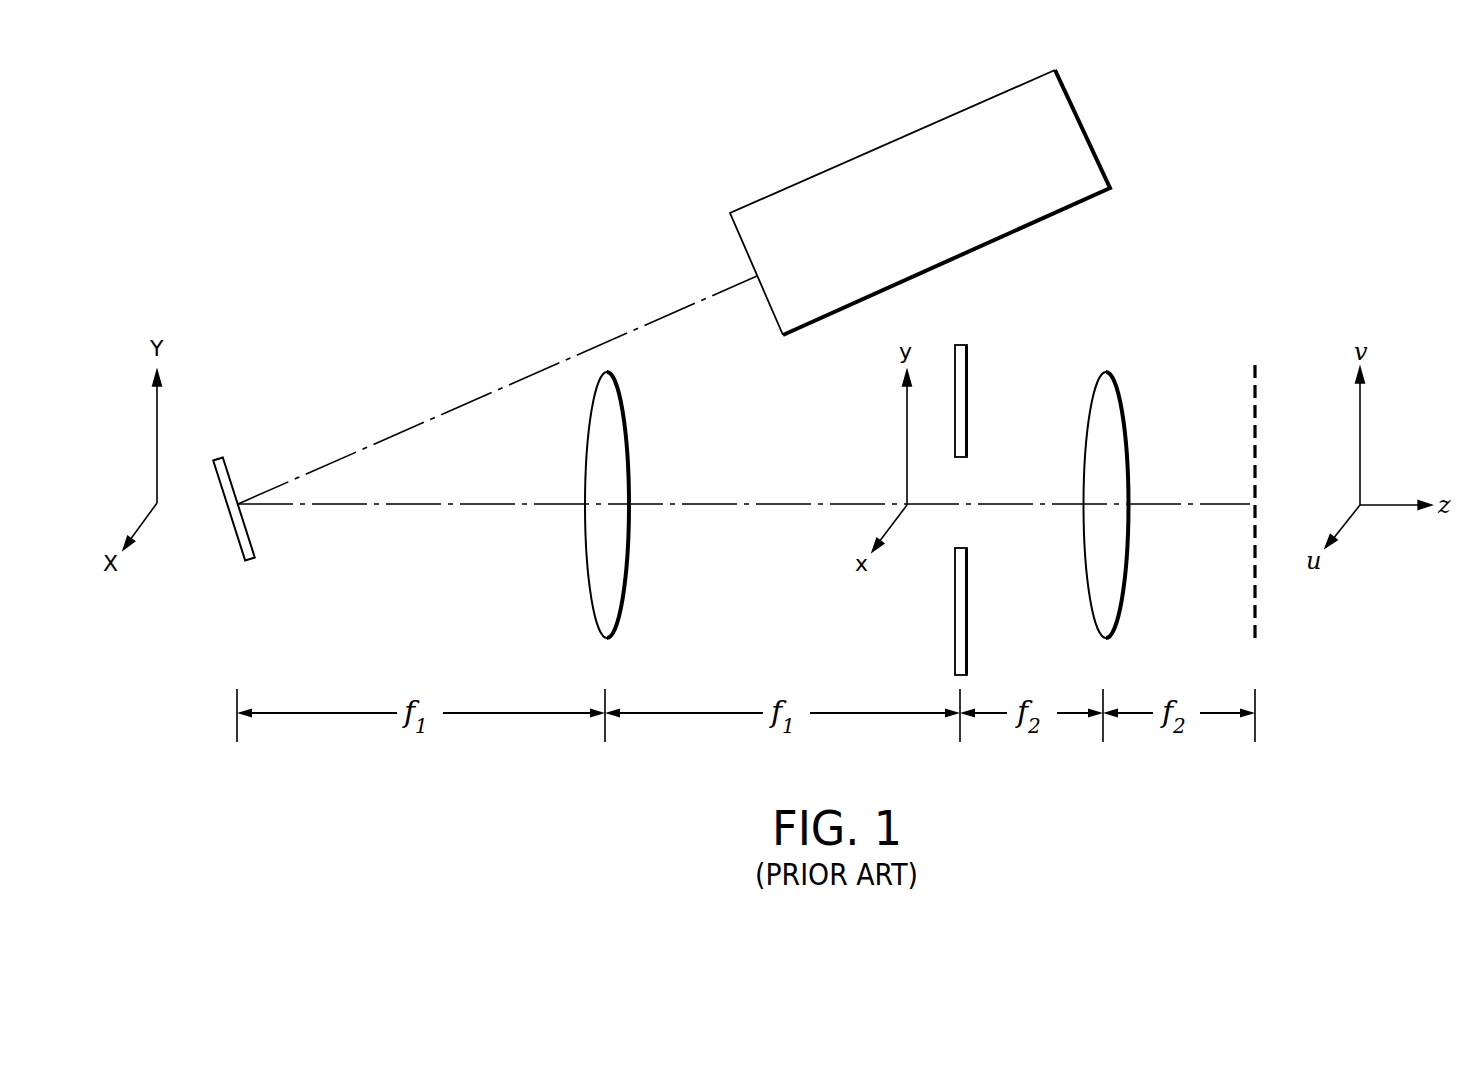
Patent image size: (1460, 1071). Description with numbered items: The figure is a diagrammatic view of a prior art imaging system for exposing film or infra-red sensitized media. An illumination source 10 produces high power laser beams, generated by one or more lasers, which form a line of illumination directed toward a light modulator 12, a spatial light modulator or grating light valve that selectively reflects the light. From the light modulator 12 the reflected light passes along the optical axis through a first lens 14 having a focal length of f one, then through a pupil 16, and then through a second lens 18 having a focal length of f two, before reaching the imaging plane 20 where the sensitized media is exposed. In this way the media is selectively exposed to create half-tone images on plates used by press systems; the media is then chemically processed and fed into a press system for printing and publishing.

The illumination source 10 is at (861, 156).
The light modulator 12 is at (231, 463).
The first lens 14 is at (628, 418).
The pupil 16 is at (968, 368).
The second lens 18 is at (1120, 395).
The imaging plane 20 is at (1259, 373).